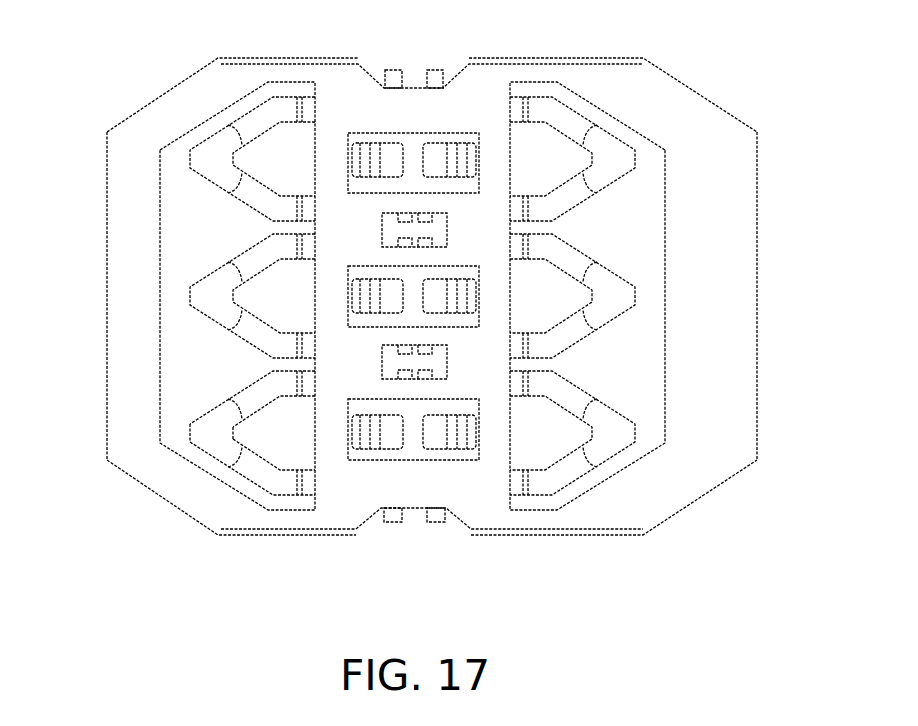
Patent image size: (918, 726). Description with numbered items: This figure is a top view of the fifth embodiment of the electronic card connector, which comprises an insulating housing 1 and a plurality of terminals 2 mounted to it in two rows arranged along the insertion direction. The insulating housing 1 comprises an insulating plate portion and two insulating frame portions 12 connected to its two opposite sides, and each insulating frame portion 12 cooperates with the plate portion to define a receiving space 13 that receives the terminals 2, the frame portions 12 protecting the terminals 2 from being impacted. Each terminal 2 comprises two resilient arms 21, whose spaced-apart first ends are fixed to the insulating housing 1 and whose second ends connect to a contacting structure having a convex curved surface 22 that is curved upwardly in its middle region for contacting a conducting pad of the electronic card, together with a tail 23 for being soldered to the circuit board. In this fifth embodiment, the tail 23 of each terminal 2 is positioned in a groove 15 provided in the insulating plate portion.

The insulating housing 1 is at (428, 297).
The terminal 2 is at (421, 296).
The insulating frame portion 12 is at (140, 258).
The receiving space 13 is at (173, 320).
The groove 15 is at (415, 158).
The resilient arm 21 is at (253, 397).
The convex curved surface 22 is at (203, 430).
The tail 23 is at (390, 435).